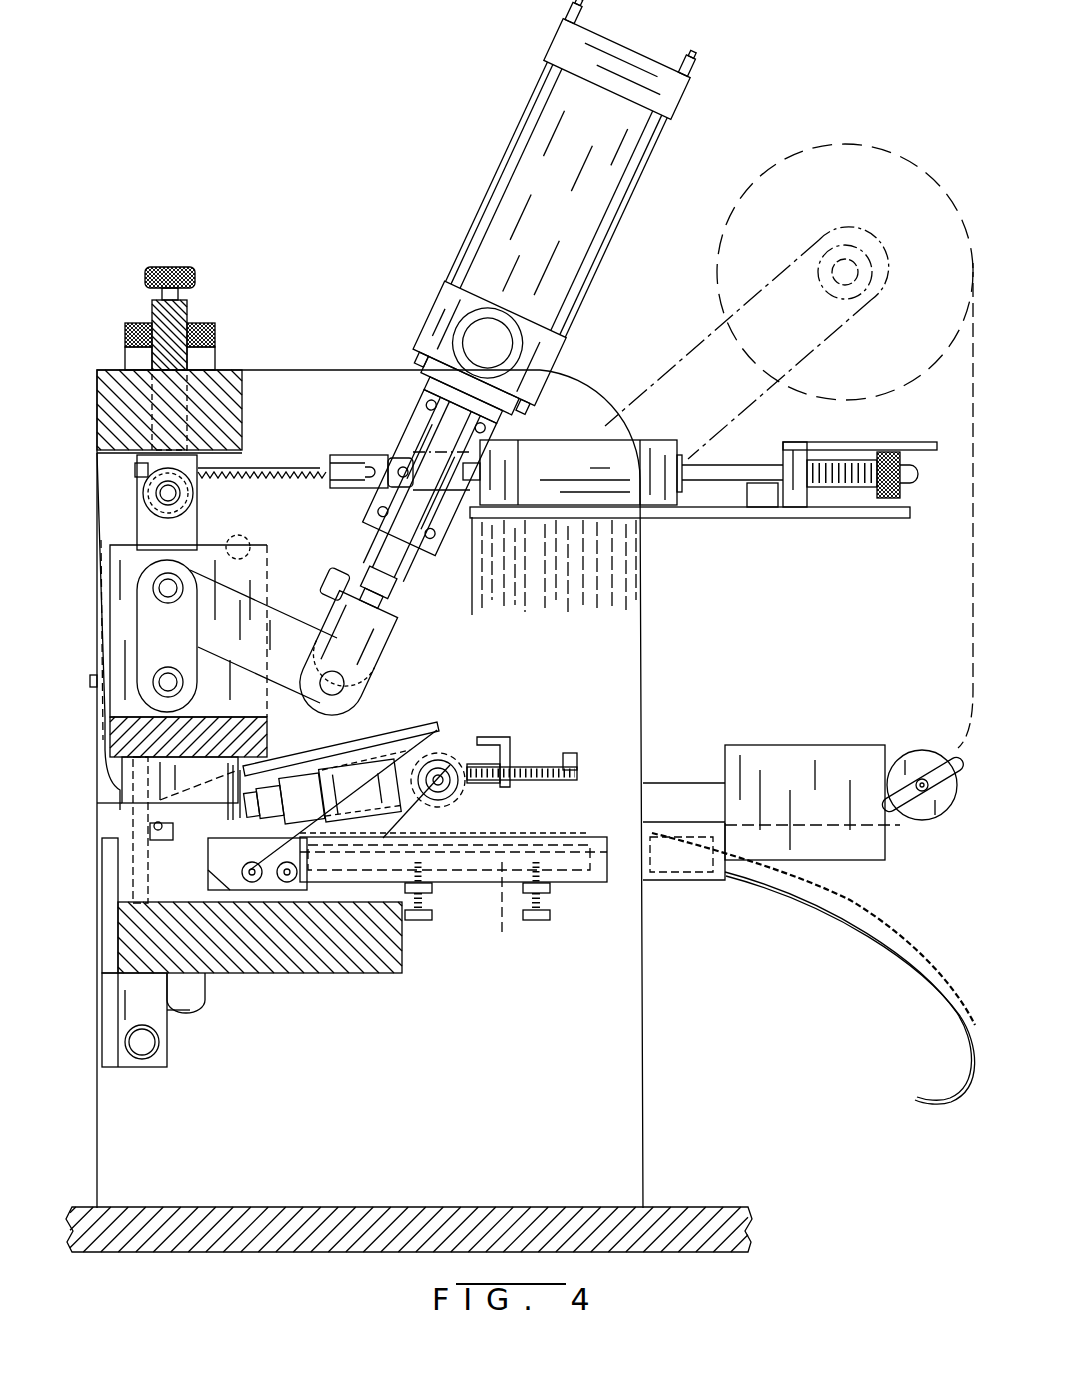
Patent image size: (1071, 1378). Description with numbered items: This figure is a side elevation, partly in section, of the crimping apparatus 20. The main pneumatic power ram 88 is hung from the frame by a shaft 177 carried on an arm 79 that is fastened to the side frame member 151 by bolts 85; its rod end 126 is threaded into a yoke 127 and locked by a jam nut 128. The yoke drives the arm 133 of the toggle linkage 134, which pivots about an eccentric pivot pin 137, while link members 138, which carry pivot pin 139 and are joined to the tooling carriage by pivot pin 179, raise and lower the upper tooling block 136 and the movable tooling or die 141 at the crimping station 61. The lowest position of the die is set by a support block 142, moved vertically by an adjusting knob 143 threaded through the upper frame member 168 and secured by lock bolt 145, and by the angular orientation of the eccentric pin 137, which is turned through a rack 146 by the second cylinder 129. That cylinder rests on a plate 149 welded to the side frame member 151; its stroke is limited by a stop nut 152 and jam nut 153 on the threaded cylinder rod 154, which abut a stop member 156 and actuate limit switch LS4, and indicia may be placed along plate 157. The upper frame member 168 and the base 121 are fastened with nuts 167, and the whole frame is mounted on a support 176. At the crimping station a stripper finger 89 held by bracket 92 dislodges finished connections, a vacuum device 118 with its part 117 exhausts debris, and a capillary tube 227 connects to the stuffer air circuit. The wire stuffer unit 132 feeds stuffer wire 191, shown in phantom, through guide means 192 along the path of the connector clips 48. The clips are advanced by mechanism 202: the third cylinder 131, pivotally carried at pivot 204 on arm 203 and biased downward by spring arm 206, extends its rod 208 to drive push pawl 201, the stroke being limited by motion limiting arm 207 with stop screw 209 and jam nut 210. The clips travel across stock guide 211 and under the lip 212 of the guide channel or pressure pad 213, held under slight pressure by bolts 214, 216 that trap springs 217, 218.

The crimping apparatus 20 is at (345, 362).
The crimp connectors or clips 48 is at (836, 888).
The crimping station 61 is at (115, 815).
The arm 79 is at (412, 385).
The bolts 85 is at (425, 407).
The main pneumatic power ram 88 is at (532, 128).
The stripper finger 89 is at (105, 770).
The bracket 92 is at (108, 705).
The pin 117 is at (145, 1055).
The vacuum device 118 is at (172, 1047).
The base 121 is at (318, 973).
The rod end 126 is at (395, 582).
The yoke 127 is at (385, 637).
The jam nut 128 is at (355, 582).
The second cylinder 129 is at (524, 474).
The third cylinder 131 is at (322, 800).
The wire stuffer unit 132 is at (800, 755).
The arm 133 is at (285, 628).
The toggle linkage 134 is at (125, 580).
The upper tooling block 136 is at (162, 779).
The eccentric pivot pin 137 is at (196, 494).
The link members 138 is at (165, 590).
The pivot pin 139 is at (178, 582).
The movable tooling or die 141 is at (133, 830).
The support block 142 is at (135, 492).
The adjusting knob 143 is at (125, 335).
The lock bolt 145 is at (172, 268).
The rack 146 is at (272, 468).
The plate 149 is at (668, 518).
The side frame member 151 is at (645, 645).
The stop nut 152 is at (878, 490).
The jam nut 153 is at (893, 482).
The cylinder rod 154 is at (740, 475).
The stop member 156 is at (805, 452).
The plate 157 is at (890, 445).
The nuts 167 is at (200, 998).
The upper frame member 168 is at (232, 370).
The support 176 is at (708, 1214).
The shaft 177 is at (455, 328).
The pivot pin 179 is at (165, 682).
The stuffer wire 191 is at (960, 628).
The guide means 192 is at (940, 755).
The push pawl 201 is at (212, 845).
The mechanism 202 is at (445, 740).
The arm 203 is at (446, 800).
The pivot 204 is at (500, 757).
The spring arm 206 is at (340, 735).
The motion limiting arm 207 is at (520, 762).
The rod 208 is at (268, 797).
The screw 209 is at (522, 775).
The nut 210 is at (577, 762).
The stock guide 211 is at (505, 912).
The lip 212 is at (600, 837).
The pressure pad 213 is at (555, 840).
The bolt 214 is at (550, 921).
The bolt 216 is at (428, 921).
The spring 217 is at (435, 878).
The spring 218 is at (553, 878).
The capillary port or tube 227 is at (155, 842).
The limit switch LS4 is at (763, 500).